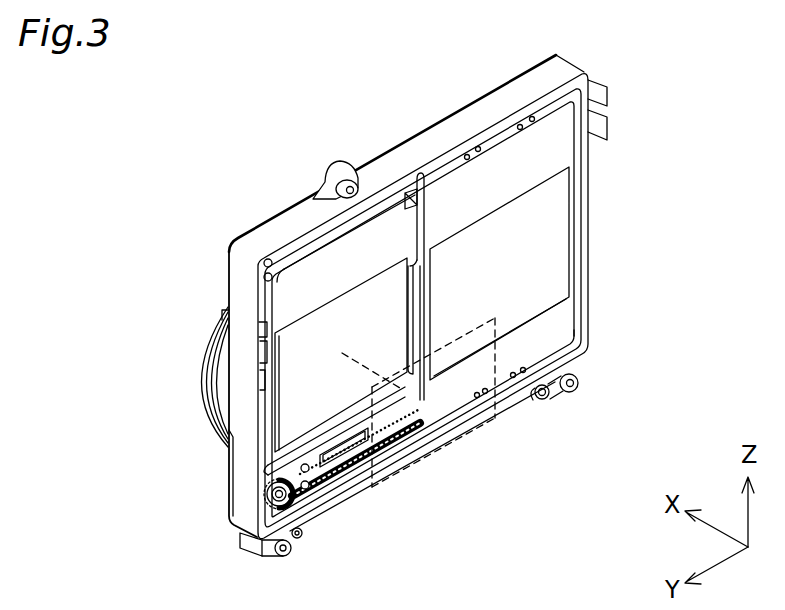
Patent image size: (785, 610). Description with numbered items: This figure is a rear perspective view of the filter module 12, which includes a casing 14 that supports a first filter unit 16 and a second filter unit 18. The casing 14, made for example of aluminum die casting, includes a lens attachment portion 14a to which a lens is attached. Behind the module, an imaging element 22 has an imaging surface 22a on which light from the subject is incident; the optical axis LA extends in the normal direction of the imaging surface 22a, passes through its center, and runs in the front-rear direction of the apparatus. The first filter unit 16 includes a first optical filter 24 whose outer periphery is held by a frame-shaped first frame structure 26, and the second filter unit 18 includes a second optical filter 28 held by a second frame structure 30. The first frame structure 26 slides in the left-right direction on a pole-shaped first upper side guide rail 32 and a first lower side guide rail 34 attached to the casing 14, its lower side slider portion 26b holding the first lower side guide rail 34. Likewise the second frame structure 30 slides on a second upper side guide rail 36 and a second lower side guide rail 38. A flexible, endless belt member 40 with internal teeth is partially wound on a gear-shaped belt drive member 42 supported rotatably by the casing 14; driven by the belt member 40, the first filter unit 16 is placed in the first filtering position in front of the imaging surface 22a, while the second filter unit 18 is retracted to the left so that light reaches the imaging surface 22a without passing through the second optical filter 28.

The filter module 12 is at (256, 130).
The casing 14 is at (416, 150).
The lens attachment portion 14a is at (203, 391).
The first filter unit 16 is at (390, 293).
The second filter unit 18 is at (552, 234).
The imaging element 22 is at (450, 452).
The imaging surface 22a is at (487, 427).
The first optical filter 24 is at (301, 368).
The first frame structure 26 is at (403, 222).
The lower side slider portion 26b is at (327, 488).
The second optical filter 28 is at (560, 278).
The second frame structure 30 is at (572, 323).
The first upper side guide rail 32 is at (422, 190).
The first lower side guide rail 34 is at (407, 440).
The second upper side guide rail 36 is at (313, 236).
The second lower side guide rail 38 is at (422, 413).
The belt member 40 is at (300, 507).
The belt drive member 42 is at (293, 545).
The optical axis LA is at (222, 284).